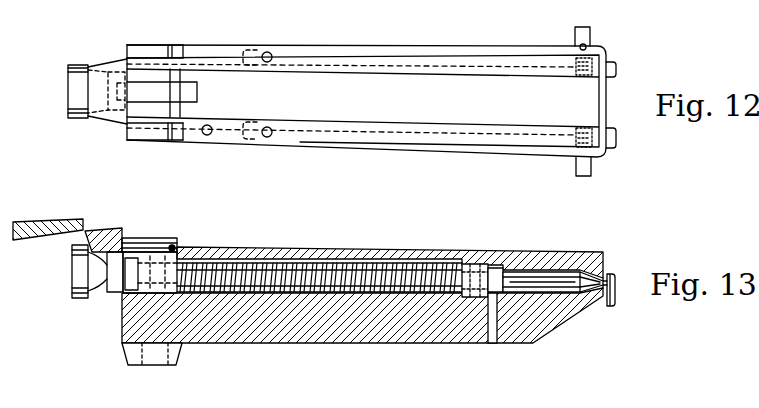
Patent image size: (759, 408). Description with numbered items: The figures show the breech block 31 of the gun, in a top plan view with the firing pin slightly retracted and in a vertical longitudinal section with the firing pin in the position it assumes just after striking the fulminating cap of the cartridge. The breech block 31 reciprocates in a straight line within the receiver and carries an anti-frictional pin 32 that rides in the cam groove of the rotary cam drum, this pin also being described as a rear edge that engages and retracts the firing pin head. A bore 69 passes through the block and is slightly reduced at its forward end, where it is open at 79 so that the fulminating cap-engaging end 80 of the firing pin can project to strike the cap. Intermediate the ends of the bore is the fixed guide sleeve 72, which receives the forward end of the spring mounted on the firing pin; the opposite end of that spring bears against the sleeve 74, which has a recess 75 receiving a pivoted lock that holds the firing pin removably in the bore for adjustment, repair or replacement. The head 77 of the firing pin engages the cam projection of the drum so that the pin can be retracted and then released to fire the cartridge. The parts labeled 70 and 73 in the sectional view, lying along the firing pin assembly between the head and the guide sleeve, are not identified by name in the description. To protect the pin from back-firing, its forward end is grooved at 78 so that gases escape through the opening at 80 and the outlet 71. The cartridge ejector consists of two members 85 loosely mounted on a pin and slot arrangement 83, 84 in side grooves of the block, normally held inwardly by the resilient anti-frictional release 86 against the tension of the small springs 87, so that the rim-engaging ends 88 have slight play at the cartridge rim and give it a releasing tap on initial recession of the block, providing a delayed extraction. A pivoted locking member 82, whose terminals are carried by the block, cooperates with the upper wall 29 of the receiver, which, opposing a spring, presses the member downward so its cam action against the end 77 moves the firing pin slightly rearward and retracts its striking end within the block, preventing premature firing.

In FIG. 13, the upper wall 29 is at (77, 225).
In FIG. 12, the breech block 31 is at (241, 142).
In FIG. 13, the breech block 31 is at (341, 338).
In FIG. 13, the anti-frictional pin 32 is at (182, 356).
In FIG. 13, the bore 69 is at (356, 262).
In FIG. 13, the collar 70 is at (503, 268).
In FIG. 13, the outlet 71 is at (493, 345).
In FIG. 13, the fixed guide sleeve 72 is at (474, 258).
In FIG. 13, the screw shaft 73 is at (400, 266).
In FIG. 13, the sleeve 74 is at (158, 272).
In FIG. 13, the recess 75 is at (128, 277).
In FIG. 12, the head 77 is at (73, 64).
In FIG. 13, the head 77 is at (80, 296).
In FIG. 13, the groove 78 is at (550, 272).
In FIG. 13, the opening 79 is at (604, 281).
In FIG. 13, the fulminating cap-engaging end 80 is at (590, 278).
In FIG. 12, the pivoted locking member 82 is at (103, 63).
In FIG. 13, the pivoted locking member 82 is at (110, 230).
In FIG. 12, the pin and slot arrangement 83 is at (258, 48).
In FIG. 12, the pin and slot arrangement 84 is at (273, 52).
In FIG. 13, the pin and slot arrangement 84 is at (147, 255).
In FIG. 12, the ejector members 85 is at (447, 47).
In FIG. 12, the resilient anti-frictional release 86 is at (592, 38).
In FIG. 12, the small springs 87 is at (577, 60).
In FIG. 13, the rim-engaging ends 88 is at (616, 298).